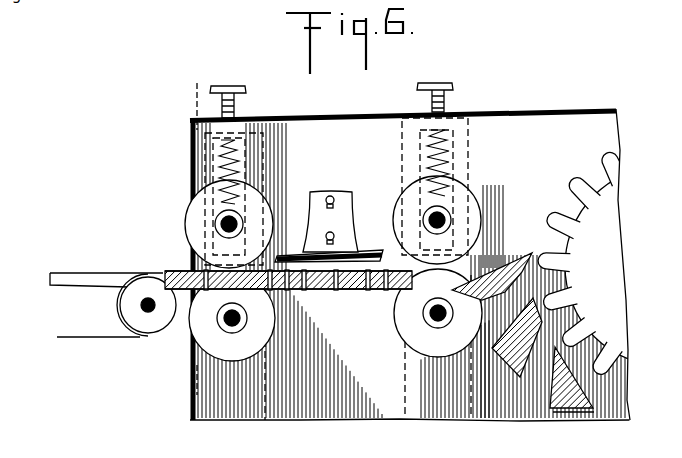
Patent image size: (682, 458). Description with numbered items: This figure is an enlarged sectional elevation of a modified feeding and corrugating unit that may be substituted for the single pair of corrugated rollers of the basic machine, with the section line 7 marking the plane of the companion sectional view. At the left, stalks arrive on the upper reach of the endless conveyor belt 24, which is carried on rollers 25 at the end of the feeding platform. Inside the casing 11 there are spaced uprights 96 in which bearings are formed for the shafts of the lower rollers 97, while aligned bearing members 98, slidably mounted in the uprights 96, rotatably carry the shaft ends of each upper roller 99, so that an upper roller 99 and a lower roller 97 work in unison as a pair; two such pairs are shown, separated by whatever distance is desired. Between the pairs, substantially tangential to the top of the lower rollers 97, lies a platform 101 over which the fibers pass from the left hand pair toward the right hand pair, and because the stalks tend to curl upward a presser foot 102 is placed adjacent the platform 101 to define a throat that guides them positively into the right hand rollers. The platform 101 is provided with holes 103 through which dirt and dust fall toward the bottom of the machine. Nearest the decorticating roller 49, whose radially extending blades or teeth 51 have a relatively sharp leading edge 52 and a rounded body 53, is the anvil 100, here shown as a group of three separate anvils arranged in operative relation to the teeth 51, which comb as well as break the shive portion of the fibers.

The section line 7- 7 is at (190, 96).
The casing 11 is at (410, 255).
The endless conveyor belt 24 is at (72, 340).
The rollers 25 is at (133, 322).
The decorticating roller 49 is at (612, 260).
The members or blades 51 is at (611, 164).
The leading edge 52 is at (570, 186).
The rounded body of the teeth 53 is at (556, 214).
The spaced uprights 96 is at (265, 420).
The lower rollers 97 is at (203, 331).
The bearing members 98 is at (452, 216).
The upper roller 99 is at (186, 220).
The anvil 100 is at (507, 262).
The platform 101 is at (302, 288).
The presser foot 102 is at (326, 196).
The holes 103 is at (372, 290).